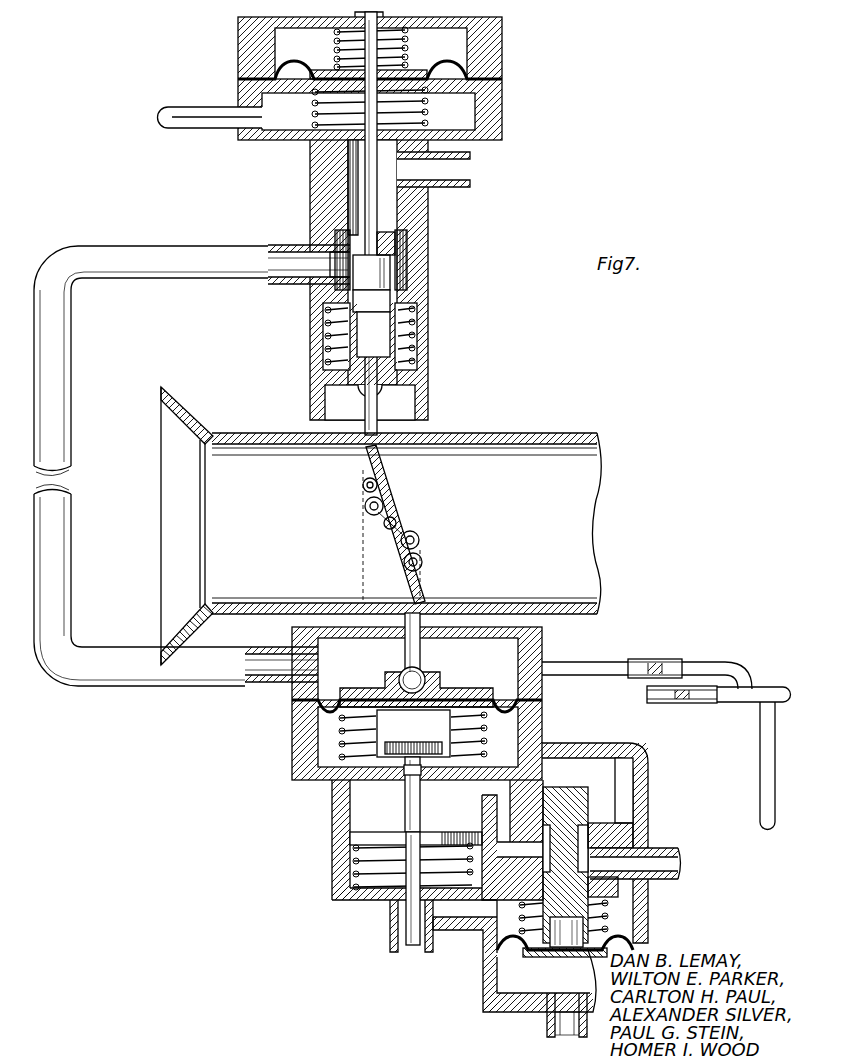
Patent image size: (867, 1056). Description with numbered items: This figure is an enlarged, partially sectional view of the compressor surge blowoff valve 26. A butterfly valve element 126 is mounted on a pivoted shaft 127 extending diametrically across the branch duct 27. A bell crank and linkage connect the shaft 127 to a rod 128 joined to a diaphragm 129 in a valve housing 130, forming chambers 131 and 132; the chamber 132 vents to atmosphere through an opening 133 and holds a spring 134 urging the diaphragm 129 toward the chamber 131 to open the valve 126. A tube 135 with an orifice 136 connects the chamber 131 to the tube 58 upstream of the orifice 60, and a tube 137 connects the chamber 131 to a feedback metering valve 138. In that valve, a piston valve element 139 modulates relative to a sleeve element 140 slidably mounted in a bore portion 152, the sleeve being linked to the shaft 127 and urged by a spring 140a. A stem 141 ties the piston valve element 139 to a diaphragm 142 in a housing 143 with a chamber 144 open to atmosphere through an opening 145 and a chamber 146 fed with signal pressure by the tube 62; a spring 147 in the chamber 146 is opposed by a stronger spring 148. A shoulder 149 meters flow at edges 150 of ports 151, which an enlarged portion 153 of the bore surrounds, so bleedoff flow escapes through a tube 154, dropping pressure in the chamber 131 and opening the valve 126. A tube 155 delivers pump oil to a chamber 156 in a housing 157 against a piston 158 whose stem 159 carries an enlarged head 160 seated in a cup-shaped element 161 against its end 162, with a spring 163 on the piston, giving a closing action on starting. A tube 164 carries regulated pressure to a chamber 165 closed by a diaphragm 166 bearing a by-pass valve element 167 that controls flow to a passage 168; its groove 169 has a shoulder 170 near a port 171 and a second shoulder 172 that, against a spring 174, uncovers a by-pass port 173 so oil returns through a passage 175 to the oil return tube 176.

The surge blowoff valve 26 is at (550, 398).
The branch duct 27 is at (590, 432).
The tube 58 is at (765, 687).
The orifice 60 is at (700, 700).
The tube 62 is at (193, 107).
The butterfly valve element 126 is at (430, 487).
The pivoted shaft 127 is at (403, 512).
The rod 128 is at (420, 652).
The diaphragm 129 is at (365, 697).
The valve housing 130 is at (540, 720).
The chamber 131 is at (538, 631).
The chamber 132 is at (325, 718).
The opening 133 is at (310, 765).
The spring 134 is at (483, 737).
The tube 135 is at (577, 665).
The orifice 136 is at (668, 660).
The tube 137 is at (211, 272).
The feedback metering valve 138 is at (405, 259).
The piston valve element 139 is at (378, 302).
The sleeve element 140 is at (395, 213).
The spring 140a is at (410, 343).
The stem 141 is at (380, 166).
The diaphragm 142 is at (466, 52).
The housing 143 is at (490, 90).
The chamber 144 is at (460, 34).
The opening 145 is at (345, 33).
The chamber 146 is at (287, 120).
The spring 147 is at (313, 125).
The spring 148 is at (400, 44).
The shoulder 149 is at (393, 257).
The edges 150 is at (352, 250).
The ports 151 is at (422, 243).
The bore portion 152 is at (352, 192).
The enlarged portion 153 is at (408, 277).
The tube 154 is at (466, 172).
The tube 155 is at (675, 850).
The chamber 156 is at (353, 812).
The housing 157 is at (330, 866).
The piston 158 is at (393, 820).
The stem 159 is at (408, 790).
The enlarged head 160 is at (427, 775).
The cup-shaped element 161 is at (388, 723).
The end 162 is at (388, 750).
The spring 163 is at (355, 888).
The tube 164 is at (760, 744).
The chamber 165 is at (510, 980).
The diaphragm 166 is at (485, 950).
The by-pass valve element 167 is at (578, 850).
The passage 168 is at (530, 871).
The groove 169 is at (600, 855).
The shoulder 170 is at (567, 913).
The port 171 is at (615, 887).
The second shoulder 172 is at (585, 823).
The by-pass port 173 is at (646, 752).
The spring 174 is at (607, 925).
The passage 175 is at (625, 808).
The oil return tube 176 is at (422, 943).